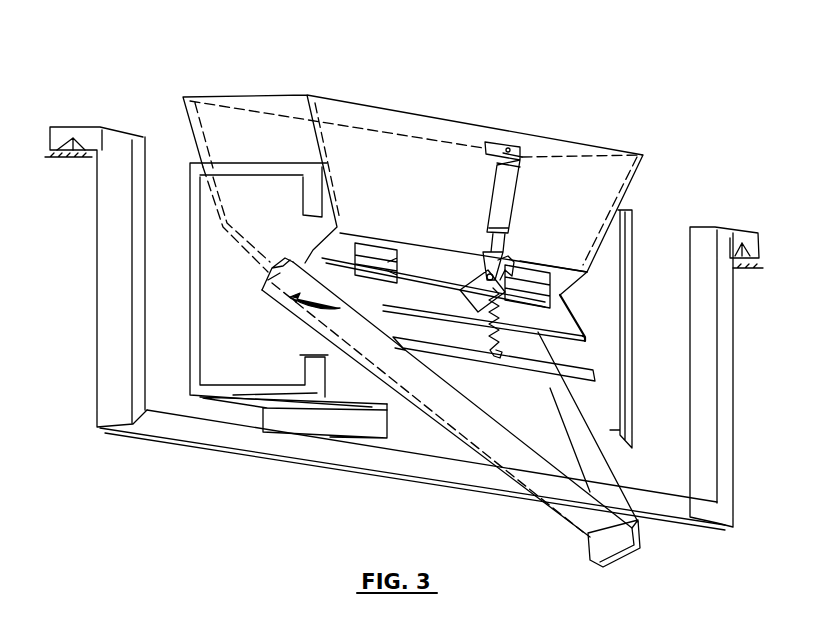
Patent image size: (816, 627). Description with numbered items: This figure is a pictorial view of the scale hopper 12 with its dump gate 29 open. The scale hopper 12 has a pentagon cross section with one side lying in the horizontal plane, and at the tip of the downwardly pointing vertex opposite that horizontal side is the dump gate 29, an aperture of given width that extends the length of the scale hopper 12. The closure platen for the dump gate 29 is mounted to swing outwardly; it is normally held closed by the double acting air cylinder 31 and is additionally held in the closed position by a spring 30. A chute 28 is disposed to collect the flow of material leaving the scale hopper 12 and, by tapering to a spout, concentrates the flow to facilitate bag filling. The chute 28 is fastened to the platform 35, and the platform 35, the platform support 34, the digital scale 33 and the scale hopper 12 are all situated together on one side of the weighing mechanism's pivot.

The scale hopper 12 is at (453, 127).
The chute 28 is at (568, 507).
The dump gate 29 is at (560, 315).
The spring 30 is at (495, 300).
The double acting air cylinder 31 is at (513, 192).
The digital scale 33 is at (357, 425).
The platform support 34 is at (98, 398).
The platform 35 is at (301, 410).